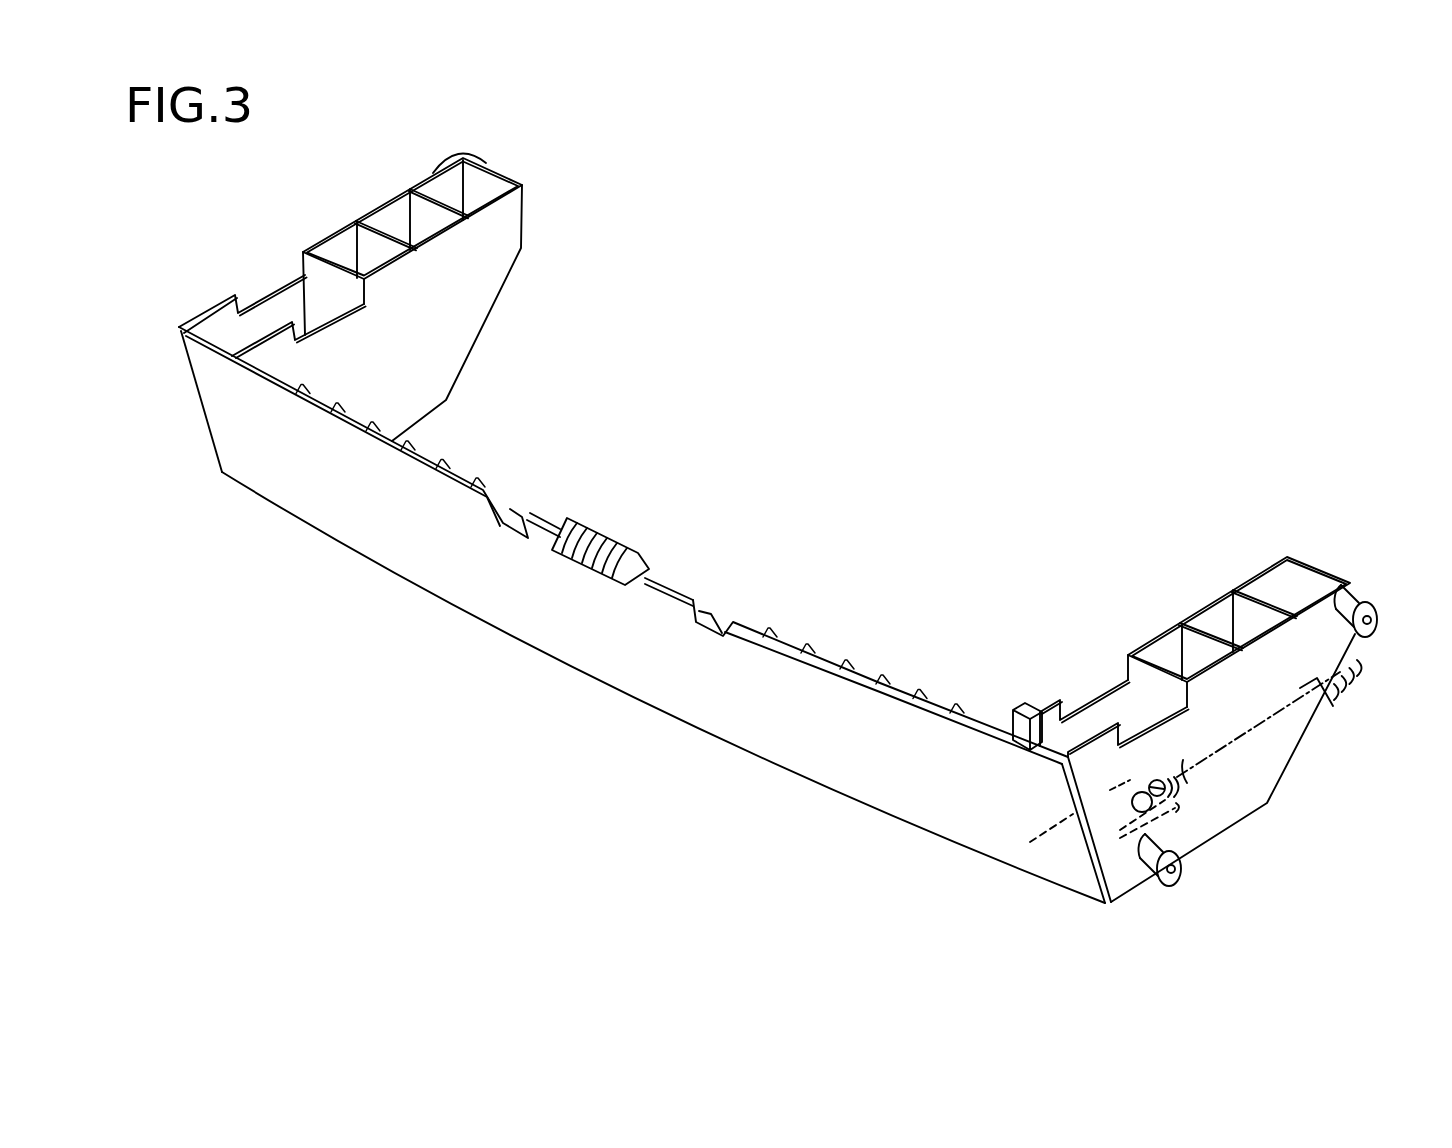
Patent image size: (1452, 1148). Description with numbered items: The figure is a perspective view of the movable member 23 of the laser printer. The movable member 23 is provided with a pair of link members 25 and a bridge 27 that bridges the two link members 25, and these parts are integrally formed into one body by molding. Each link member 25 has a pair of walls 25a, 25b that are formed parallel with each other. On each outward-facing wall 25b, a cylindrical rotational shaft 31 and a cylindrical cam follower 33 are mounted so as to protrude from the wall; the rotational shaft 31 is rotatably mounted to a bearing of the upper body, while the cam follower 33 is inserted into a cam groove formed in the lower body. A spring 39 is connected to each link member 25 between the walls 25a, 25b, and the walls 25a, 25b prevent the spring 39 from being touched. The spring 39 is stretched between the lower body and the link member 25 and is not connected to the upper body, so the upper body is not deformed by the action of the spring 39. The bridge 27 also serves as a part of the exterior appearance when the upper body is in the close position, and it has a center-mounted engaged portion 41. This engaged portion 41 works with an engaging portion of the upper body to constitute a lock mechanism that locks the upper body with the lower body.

The movable member 23 is at (800, 423).
The link member 25 is at (796, 516).
The wall 25a is at (435, 358).
The wall 25b is at (333, 235).
The bridge 27 is at (553, 638).
The rotational shaft 31 is at (430, 165).
The cam follower 33 is at (1182, 860).
The spring 39 is at (1227, 752).
The engaged portion 41 is at (598, 573).